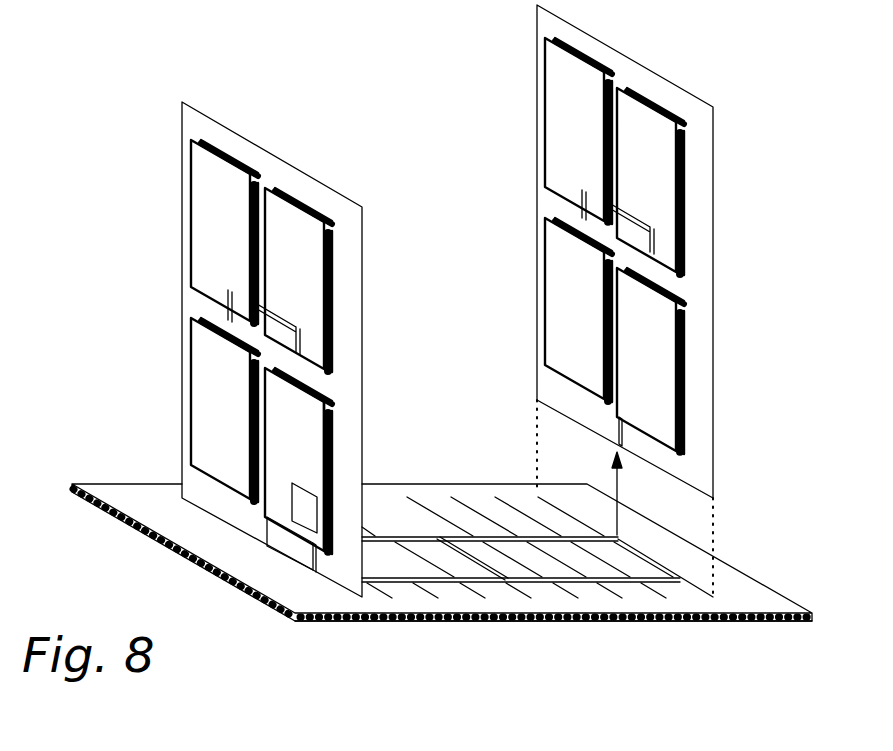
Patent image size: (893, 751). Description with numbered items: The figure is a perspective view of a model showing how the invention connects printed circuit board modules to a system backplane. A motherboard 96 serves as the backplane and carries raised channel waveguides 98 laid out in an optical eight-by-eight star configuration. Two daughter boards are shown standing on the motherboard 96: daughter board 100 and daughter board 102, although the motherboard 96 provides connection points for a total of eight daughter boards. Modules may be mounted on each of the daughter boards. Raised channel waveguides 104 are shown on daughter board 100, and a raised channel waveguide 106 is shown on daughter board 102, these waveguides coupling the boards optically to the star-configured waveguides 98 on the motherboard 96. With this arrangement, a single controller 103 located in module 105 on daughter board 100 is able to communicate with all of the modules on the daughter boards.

The motherboard 96 is at (750, 583).
The raised channel waveguides 98 is at (366, 584).
The daughter board 100 is at (182, 128).
The daughter board 102 is at (668, 80).
The controller 103 is at (312, 507).
The raised channel waveguides 104 is at (315, 573).
The module 105 is at (312, 422).
The raised channel waveguide 106 is at (612, 430).